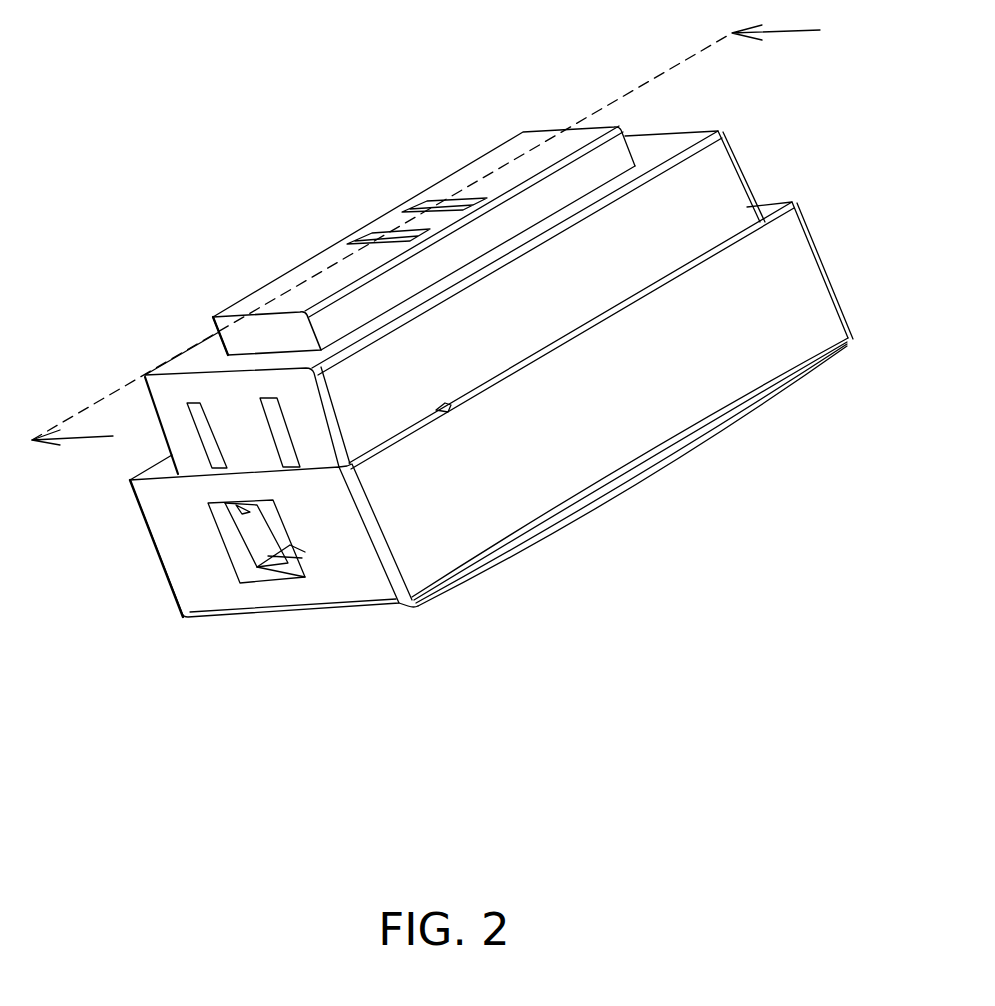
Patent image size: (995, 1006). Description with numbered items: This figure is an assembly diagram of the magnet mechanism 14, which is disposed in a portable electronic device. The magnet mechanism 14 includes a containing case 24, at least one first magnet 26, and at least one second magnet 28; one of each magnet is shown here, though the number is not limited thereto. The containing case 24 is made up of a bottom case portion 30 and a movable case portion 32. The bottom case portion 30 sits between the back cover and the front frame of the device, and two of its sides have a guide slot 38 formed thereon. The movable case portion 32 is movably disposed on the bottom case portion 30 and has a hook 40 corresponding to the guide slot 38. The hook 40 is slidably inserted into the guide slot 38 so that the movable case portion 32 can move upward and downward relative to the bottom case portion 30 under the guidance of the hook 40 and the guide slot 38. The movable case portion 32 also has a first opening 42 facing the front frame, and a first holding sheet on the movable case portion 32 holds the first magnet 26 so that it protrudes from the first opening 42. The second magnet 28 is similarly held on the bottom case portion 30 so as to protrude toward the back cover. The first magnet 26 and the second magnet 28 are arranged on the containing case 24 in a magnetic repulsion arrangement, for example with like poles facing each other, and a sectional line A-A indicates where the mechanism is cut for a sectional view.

The magnet mechanism 14 is at (214, 86).
The containing case 24 is at (852, 512).
The first magnet 26 is at (518, 143).
The second magnet 28 is at (573, 505).
The bottom case portion 30 is at (782, 317).
The movable case portion 32 is at (638, 253).
The guide slot 38 is at (237, 538).
The hook 40 is at (290, 549).
The first opening 42 is at (288, 350).